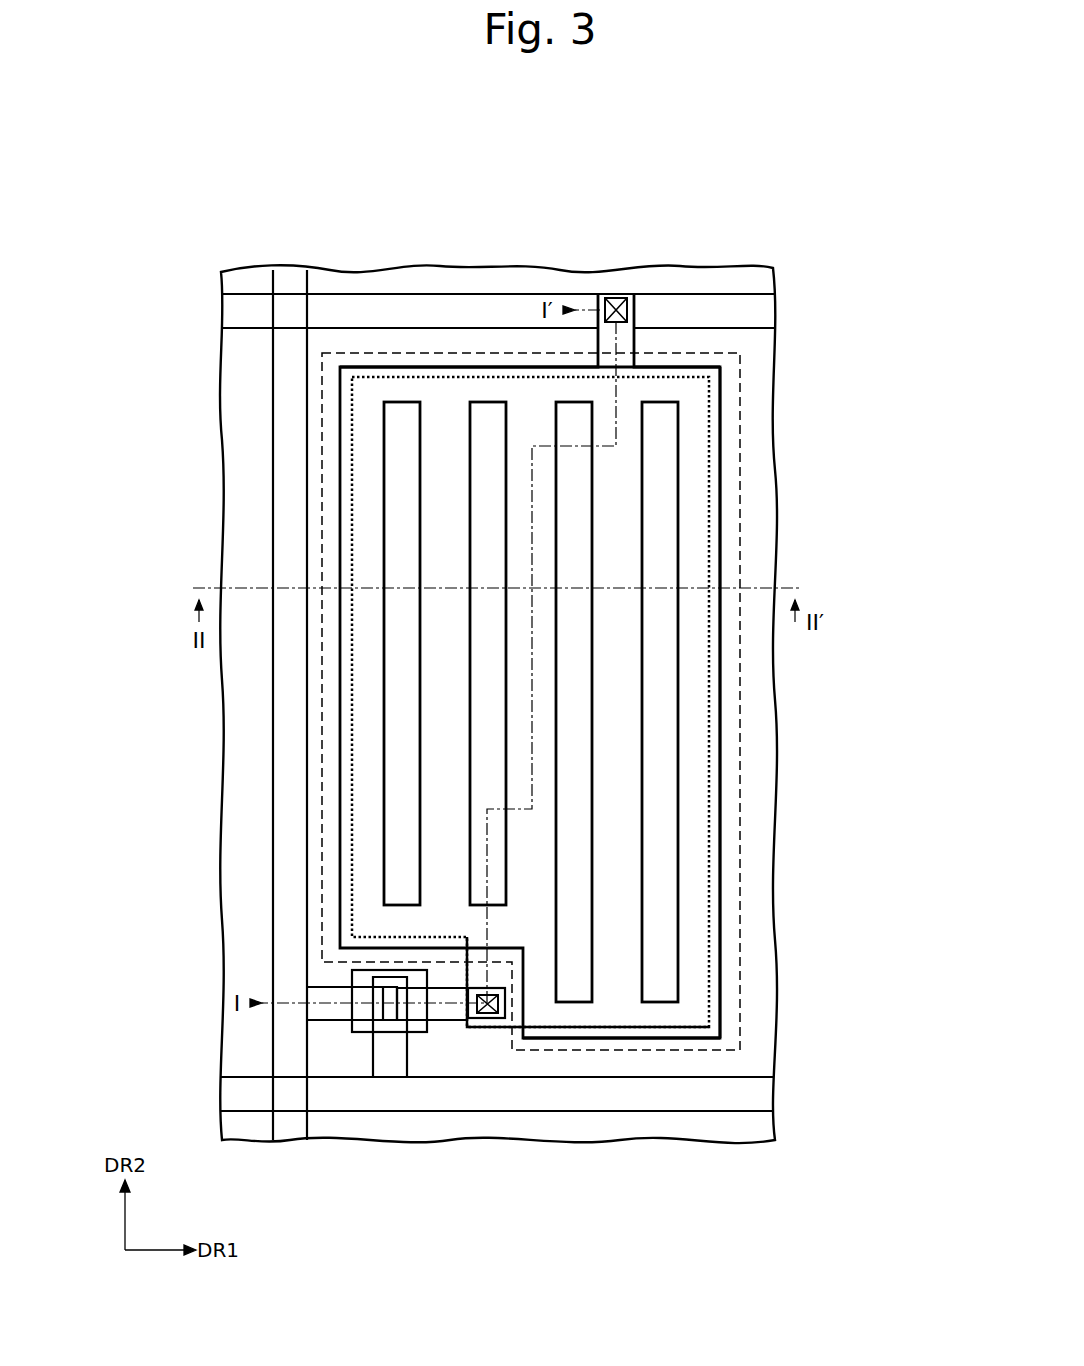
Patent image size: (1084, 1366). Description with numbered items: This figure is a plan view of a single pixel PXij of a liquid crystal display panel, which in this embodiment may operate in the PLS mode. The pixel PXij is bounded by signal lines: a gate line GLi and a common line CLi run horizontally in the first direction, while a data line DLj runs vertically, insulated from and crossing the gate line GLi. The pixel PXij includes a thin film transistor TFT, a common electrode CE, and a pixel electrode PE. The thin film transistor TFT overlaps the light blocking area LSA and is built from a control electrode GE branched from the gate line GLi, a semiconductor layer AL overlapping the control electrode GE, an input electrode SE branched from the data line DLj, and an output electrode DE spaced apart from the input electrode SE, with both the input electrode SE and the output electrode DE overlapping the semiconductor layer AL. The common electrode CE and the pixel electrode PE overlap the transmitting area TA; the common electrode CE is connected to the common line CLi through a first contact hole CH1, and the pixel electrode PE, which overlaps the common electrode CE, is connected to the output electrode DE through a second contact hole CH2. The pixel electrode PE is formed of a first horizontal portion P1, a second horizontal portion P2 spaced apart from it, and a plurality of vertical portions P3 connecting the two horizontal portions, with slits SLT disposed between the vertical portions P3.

The pixel PXij is at (700, 194).
The data line DLj is at (293, 280).
The common line CLi is at (237, 316).
The gate line GLi is at (237, 1101).
The first contact hole CH1 is at (614, 297).
The second contact hole CH2 is at (505, 1002).
The pixel electrode PE is at (538, 666).
The first horizontal portion P1 is at (660, 389).
The second horizontal portion P2 is at (664, 1021).
The vertical portions P3 is at (693, 642).
The slits SLT is at (663, 705).
The common electrode CE is at (338, 746).
The light blocking area LSA is at (758, 982).
The transmitting area TA is at (742, 1027).
The thin film transistor TFT is at (399, 1118).
The input electrode SE is at (342, 1012).
The semiconductor layer AL is at (383, 1032).
The control electrode GE is at (407, 1050).
The output electrode DE is at (450, 1010).